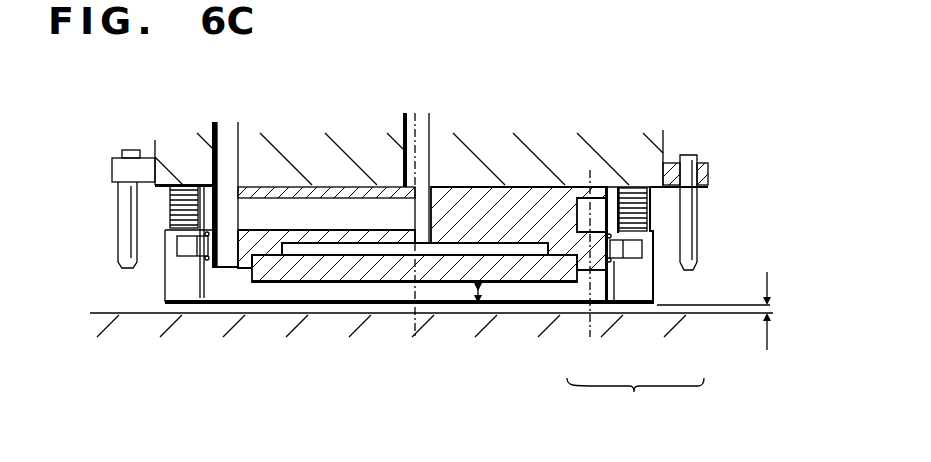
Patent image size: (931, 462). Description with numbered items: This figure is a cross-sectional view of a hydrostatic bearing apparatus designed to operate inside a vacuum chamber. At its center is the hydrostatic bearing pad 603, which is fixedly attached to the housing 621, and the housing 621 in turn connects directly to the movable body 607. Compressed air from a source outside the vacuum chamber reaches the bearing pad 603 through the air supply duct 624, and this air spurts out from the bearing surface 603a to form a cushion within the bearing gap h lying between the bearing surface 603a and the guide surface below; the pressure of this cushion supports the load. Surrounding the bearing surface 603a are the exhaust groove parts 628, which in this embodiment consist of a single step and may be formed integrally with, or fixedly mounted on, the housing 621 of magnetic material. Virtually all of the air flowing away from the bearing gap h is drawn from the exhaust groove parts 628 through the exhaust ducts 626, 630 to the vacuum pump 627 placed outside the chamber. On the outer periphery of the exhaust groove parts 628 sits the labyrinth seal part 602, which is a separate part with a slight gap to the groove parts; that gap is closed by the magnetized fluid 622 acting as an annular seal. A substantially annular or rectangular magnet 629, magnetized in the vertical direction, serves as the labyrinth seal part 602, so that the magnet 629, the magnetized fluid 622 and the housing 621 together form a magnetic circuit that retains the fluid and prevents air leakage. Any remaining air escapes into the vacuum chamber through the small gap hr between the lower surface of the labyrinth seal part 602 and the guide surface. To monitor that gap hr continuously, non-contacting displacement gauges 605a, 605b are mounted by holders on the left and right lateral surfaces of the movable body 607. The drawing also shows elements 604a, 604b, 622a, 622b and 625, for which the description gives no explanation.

The labyrinth seal part 602 is at (175, 282).
The hydrostatic bearing pad 603 is at (313, 270).
The bearing surface 603a is at (512, 282).
The spring 604a is at (648, 205).
The spring 604b is at (170, 203).
The non-contacting displacement gauge 605a is at (688, 155).
The non-contacting displacement gauge 605b is at (128, 150).
The movable body 607 is at (600, 187).
The housing 621 is at (547, 187).
The magnetized fluid 622 is at (635, 399).
The positioning member first part 622a is at (603, 304).
The positioning member second part 622b is at (630, 304).
The air supply duct 624 is at (423, 158).
The push rod 625 is at (417, 103).
The exhaust duct 626 is at (327, 187).
The vacuum pump 627 is at (228, 107).
The exhaust groove part 628 is at (226, 268).
The magnet 629 is at (648, 250).
The exhaust duct 630 is at (216, 143).
The bearing gap h is at (478, 300).
The labyrinth seal part gap hr is at (732, 311).